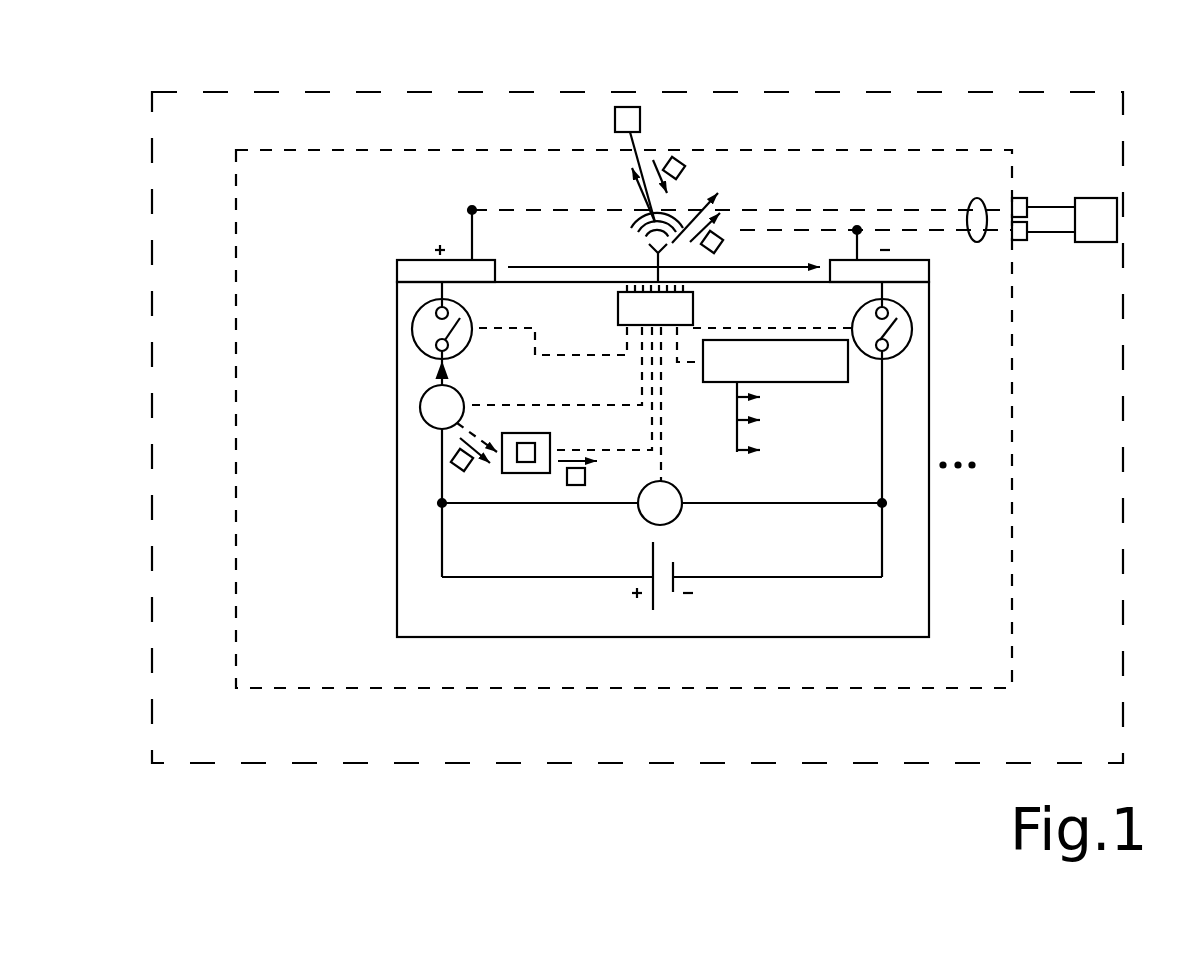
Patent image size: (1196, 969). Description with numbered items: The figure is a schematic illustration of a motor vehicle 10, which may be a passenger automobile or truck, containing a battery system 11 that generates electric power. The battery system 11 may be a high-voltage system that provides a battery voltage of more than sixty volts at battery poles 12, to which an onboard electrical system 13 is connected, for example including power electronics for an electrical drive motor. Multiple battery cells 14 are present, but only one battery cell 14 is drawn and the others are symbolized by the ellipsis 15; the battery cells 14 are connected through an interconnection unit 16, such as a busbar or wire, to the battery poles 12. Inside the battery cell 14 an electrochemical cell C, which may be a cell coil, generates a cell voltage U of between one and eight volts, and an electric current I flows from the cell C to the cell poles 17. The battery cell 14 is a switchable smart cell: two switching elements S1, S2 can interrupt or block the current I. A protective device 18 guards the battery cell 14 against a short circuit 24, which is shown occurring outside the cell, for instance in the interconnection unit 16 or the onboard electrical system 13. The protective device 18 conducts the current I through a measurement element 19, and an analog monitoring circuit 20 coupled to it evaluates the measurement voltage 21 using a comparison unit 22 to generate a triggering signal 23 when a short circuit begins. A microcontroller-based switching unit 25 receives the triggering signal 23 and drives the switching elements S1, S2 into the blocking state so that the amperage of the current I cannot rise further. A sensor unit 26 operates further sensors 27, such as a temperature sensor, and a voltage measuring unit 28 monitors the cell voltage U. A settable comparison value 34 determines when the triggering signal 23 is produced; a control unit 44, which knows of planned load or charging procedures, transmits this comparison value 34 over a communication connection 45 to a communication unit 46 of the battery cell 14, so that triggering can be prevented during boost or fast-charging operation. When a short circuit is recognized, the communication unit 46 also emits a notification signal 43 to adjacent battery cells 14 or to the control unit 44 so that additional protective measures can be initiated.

The motor vehicle 10 is at (1125, 446).
The battery system 11 is at (940, 688).
The battery poles 12 is at (1027, 205).
The onboard electrical system 13 is at (1085, 198).
The battery cell 14 is at (397, 522).
The ellipsis 15 is at (982, 468).
The interconnection unit 16 is at (977, 198).
The cell poles 17 is at (425, 262).
The protective device 18 is at (813, 452).
The measurement element 19 is at (420, 392).
The analog monitoring circuit 20 is at (525, 433).
The measurement voltage 21 is at (468, 472).
The comparison unit 22 is at (524, 462).
The triggering signal 23 is at (585, 476).
The short circuit 24 is at (926, 246).
The switching unit 25 is at (693, 318).
The sensor unit 26 is at (840, 382).
The sensors 27 is at (760, 396).
The voltage measuring unit 28 is at (676, 516).
The comparison value 34 is at (682, 170).
The notification signal 43 is at (720, 247).
The control unit 44 is at (627, 107).
The communication connection 45 is at (632, 160).
The communication unit 46 is at (657, 277).
The switching element S1 is at (461, 320).
The switching element S2 is at (873, 325).
The cell voltage U is at (556, 267).
The electric current I is at (450, 378).
The electrochemical cell C is at (653, 563).